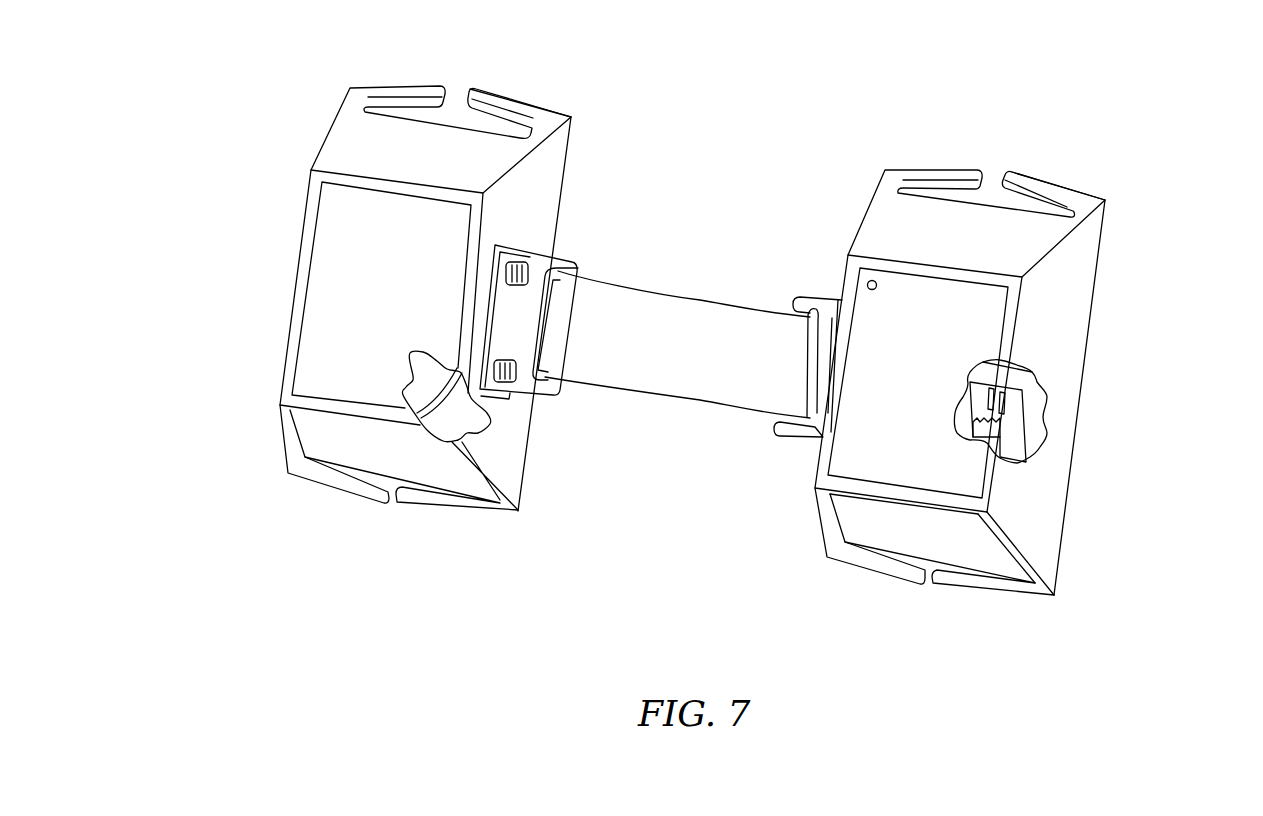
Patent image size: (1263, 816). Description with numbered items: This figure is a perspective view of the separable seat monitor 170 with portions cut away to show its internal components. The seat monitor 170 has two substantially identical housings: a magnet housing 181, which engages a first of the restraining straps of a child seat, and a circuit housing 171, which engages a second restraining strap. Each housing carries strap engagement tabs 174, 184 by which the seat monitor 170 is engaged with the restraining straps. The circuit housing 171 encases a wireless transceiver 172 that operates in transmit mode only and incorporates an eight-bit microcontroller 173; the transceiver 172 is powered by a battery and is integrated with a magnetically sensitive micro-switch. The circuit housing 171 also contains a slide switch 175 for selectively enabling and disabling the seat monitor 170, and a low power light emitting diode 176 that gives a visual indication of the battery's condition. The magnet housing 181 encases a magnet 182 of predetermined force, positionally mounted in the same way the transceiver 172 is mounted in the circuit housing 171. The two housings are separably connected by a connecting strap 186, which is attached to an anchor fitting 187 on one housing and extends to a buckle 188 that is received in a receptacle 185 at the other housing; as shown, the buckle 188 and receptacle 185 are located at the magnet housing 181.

The seat monitor 170 is at (694, 170).
The circuit housing 171 is at (1104, 276).
The wireless transceiver 172 is at (1022, 415).
The microcontroller 173 is at (1022, 442).
The strap engagement tab 174 is at (1043, 184).
The slide switch 175 is at (1008, 365).
The light emitting diode 176 is at (877, 285).
The magnet housing 181 is at (333, 123).
The magnet 182 is at (490, 420).
The strap engagement tab 184 is at (498, 96).
The receptacle 185 is at (512, 247).
The connecting strap 186 is at (662, 293).
The anchor fitting 187 is at (818, 297).
The buckle 188 is at (572, 262).